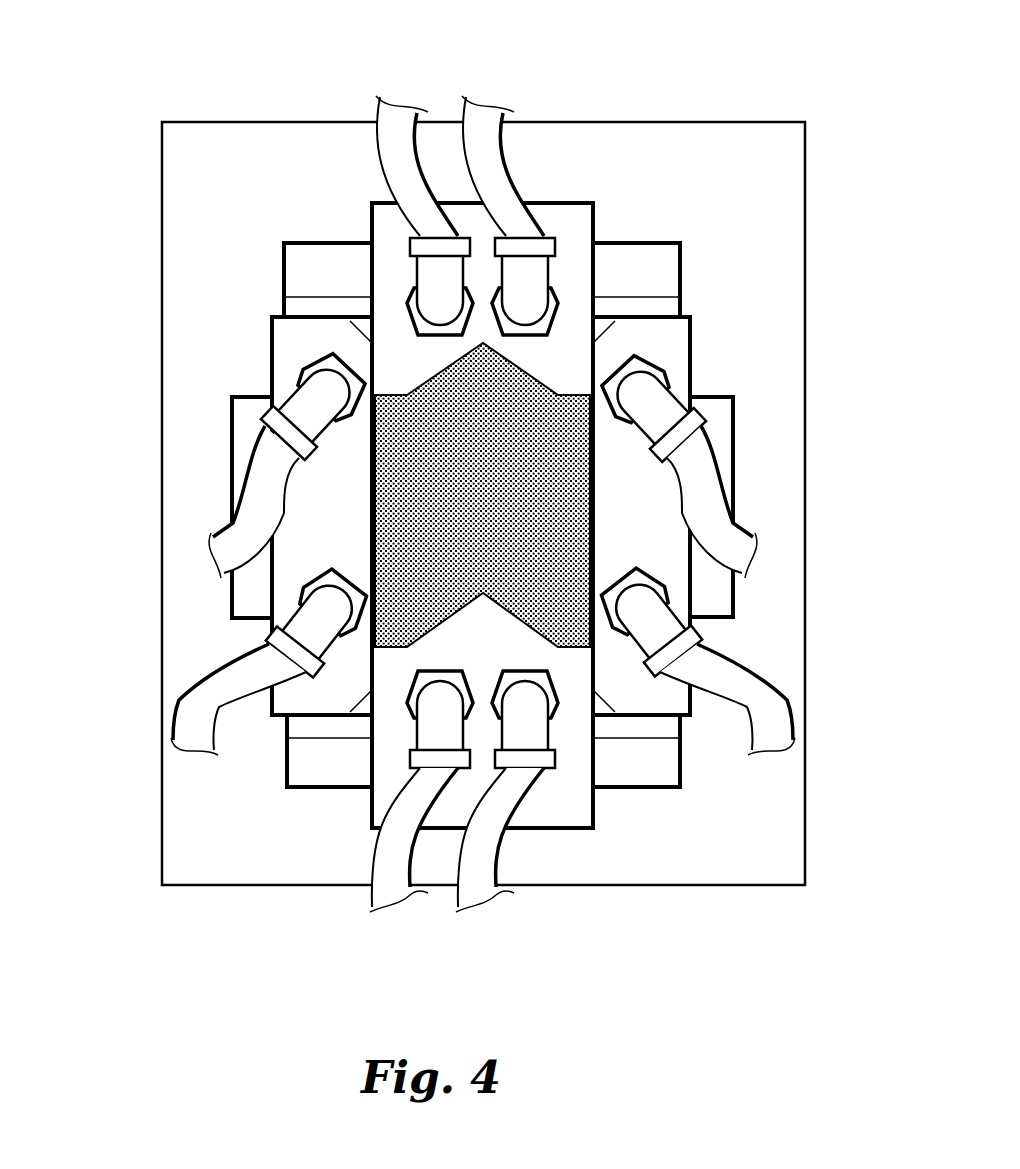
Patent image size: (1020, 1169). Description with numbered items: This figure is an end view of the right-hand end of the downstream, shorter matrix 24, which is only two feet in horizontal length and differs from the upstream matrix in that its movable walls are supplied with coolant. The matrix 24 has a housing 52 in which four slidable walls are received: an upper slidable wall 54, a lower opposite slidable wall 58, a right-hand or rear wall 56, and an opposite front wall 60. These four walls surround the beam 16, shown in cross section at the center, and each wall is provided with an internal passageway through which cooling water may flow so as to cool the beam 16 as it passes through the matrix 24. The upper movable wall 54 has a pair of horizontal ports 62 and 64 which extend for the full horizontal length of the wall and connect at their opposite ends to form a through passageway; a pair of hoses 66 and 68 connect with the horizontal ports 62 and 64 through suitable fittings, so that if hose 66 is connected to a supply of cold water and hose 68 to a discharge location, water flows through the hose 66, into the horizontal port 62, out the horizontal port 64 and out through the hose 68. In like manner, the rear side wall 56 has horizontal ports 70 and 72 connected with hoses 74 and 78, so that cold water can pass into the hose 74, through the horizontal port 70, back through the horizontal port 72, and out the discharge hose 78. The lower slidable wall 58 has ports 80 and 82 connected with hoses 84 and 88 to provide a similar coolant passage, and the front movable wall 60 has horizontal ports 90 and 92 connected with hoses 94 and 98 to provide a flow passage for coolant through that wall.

The matrix 24 is at (705, 135).
The housing 52 is at (770, 140).
The upper slidable wall 54 is at (572, 225).
The rear wall 56 is at (673, 343).
The lower slidable wall 58 is at (567, 810).
The front wall 60 is at (293, 343).
The beam 16 is at (473, 417).
The horizontal port 62 is at (410, 307).
The horizontal port 64 is at (563, 307).
The hose 66 is at (380, 135).
The hose 68 is at (480, 150).
The horizontal port 70 is at (657, 372).
The horizontal port 72 is at (632, 573).
The hose 74 is at (718, 540).
The discharge hose 78 is at (767, 715).
The port 80 is at (413, 703).
The port 82 is at (548, 690).
The hose 84 is at (387, 868).
The hose 88 is at (478, 855).
The horizontal port 90 is at (310, 362).
The horizontal port 92 is at (335, 573).
The hose 94 is at (233, 527).
The hose 98 is at (192, 713).